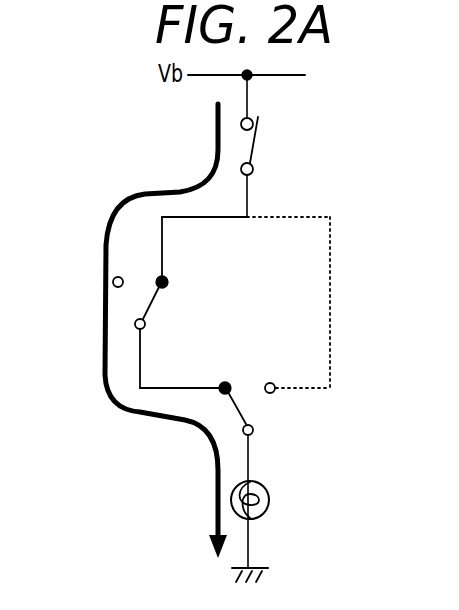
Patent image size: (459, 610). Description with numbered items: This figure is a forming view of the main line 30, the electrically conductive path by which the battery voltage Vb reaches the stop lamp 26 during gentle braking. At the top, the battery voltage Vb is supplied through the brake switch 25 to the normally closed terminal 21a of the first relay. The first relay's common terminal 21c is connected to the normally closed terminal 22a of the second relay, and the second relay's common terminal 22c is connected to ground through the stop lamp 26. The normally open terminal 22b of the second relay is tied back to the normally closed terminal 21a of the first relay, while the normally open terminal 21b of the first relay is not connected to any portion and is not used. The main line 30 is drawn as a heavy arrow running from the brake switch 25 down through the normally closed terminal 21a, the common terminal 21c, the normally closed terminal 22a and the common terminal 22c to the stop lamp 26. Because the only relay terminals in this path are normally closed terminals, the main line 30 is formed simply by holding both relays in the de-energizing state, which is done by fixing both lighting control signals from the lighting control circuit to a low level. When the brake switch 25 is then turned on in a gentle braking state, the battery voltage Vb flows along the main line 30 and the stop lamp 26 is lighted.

The brake switch 25 is at (264, 147).
The main line 30 is at (148, 191).
The normally closed terminal of the first relay 21a is at (166, 279).
The normally open terminal of the first relay 21b is at (115, 277).
The common terminal of the first relay 21c is at (146, 323).
The normally closed terminal of the second relay 22a is at (230, 384).
The normally open terminal of the second relay 22b is at (275, 383).
The common terminal of the second relay 22c is at (254, 430).
The stop lamp 26 is at (269, 512).